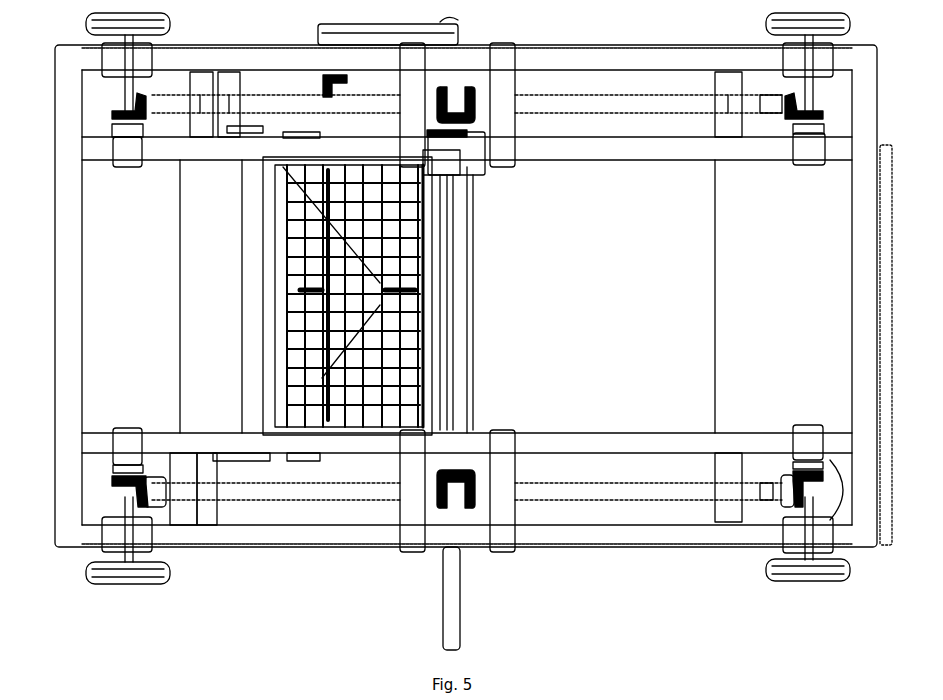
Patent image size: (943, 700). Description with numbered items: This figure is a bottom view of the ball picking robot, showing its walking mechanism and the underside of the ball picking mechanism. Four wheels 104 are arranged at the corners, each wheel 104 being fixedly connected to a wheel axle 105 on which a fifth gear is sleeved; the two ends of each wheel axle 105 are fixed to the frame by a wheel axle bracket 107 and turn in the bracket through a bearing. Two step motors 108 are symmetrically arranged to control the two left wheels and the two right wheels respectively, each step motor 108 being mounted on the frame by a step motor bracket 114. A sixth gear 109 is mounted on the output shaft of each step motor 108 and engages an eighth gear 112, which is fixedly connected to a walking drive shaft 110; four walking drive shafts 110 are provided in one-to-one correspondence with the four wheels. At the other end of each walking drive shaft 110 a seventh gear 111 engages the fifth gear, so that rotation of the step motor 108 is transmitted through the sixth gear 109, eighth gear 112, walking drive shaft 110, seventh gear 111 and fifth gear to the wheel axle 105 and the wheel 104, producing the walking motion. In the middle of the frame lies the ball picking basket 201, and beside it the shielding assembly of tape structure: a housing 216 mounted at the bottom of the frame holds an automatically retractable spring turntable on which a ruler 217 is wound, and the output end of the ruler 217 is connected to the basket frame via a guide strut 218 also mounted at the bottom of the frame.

The wheel 104 is at (88, 27).
The wheel axle 105 is at (82, 95).
The wheel axle bracket 107 is at (130, 155).
The step motor 108 is at (525, 130).
The sixth gear 109 is at (457, 132).
The walking drive shaft 110 is at (248, 110).
The seventh gear 111 is at (143, 100).
The eighth gear 112 is at (445, 88).
The step motor bracket 114 is at (478, 165).
The ball picking basket 201 is at (360, 405).
The housing 216 is at (470, 380).
The ruler 217 is at (462, 398).
The guide strut 218 is at (440, 410).